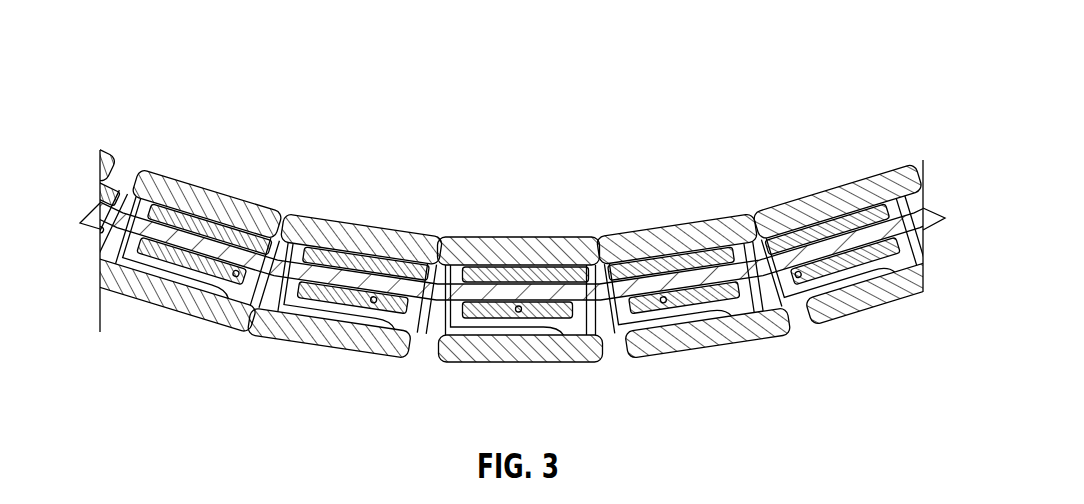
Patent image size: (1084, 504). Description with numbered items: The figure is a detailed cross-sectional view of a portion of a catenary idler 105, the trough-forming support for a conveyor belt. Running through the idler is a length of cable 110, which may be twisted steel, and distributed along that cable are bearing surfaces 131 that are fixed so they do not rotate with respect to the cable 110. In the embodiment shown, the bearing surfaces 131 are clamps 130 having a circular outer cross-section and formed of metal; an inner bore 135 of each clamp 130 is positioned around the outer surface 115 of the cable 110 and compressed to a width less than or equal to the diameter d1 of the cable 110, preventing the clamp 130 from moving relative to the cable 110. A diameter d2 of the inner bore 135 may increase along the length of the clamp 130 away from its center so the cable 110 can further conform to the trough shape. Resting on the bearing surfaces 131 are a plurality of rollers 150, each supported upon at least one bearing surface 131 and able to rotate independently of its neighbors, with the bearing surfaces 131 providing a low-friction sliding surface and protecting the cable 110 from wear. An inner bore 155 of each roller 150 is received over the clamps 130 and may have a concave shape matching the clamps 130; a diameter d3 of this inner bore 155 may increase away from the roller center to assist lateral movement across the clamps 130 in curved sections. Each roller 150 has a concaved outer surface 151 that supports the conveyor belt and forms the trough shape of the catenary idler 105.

The catenary idler 105 is at (138, 64).
The cable 110 is at (361, 243).
The outer surface of the cable 115 is at (445, 210).
The clamp 130 is at (461, 183).
The bearing surface 131 is at (104, 255).
The inner bore of the clamp 135 is at (180, 283).
The roller 150 is at (183, 307).
The concaved outer surface of the roller 151 is at (213, 187).
The inner bore of the roller 155 is at (177, 207).
The diameter of the cable d1 is at (310, 300).
The diameter of the inner bore of the clamp d2 is at (572, 337).
The diameter of the inner bore of the roller d3 is at (590, 362).